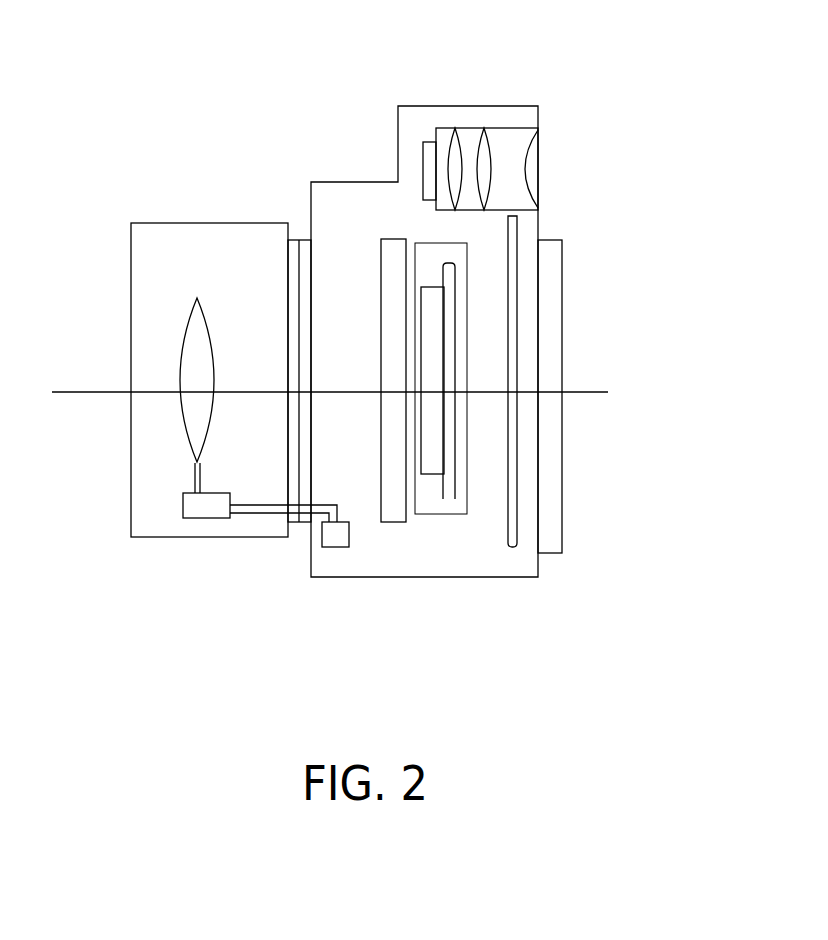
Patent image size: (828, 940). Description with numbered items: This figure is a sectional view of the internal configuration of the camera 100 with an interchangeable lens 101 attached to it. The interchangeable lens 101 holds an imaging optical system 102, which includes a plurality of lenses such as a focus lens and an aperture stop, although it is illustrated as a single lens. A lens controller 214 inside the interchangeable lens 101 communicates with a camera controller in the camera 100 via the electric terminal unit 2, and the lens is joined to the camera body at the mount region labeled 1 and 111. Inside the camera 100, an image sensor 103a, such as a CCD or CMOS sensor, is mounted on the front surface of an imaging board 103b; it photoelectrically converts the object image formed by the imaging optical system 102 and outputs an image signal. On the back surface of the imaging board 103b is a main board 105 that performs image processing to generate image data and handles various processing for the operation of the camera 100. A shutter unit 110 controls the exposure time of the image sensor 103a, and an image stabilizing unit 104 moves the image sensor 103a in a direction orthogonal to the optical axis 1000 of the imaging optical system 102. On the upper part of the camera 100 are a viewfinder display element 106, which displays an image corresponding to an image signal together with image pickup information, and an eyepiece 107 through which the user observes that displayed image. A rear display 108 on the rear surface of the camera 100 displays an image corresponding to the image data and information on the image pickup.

The optical axis 1000 is at (93, 393).
The interchangeable lens 101 is at (172, 245).
The imaging optical system 102 is at (205, 290).
The lens controller 214 is at (200, 508).
The electric terminal unit 2 is at (335, 535).
The mount 1 is at (303, 258).
The mounting portion 111 is at (298, 262).
The camera 100 is at (483, 115).
The viewfinder display element 106 is at (430, 160).
The eyepiece 107 is at (532, 173).
The main board 105 is at (512, 245).
The rear display 108 is at (550, 345).
The shutter unit 110 is at (390, 498).
The image sensor 103a is at (433, 452).
The imaging board 103b is at (443, 520).
The image stabilizing unit 104 is at (448, 477).